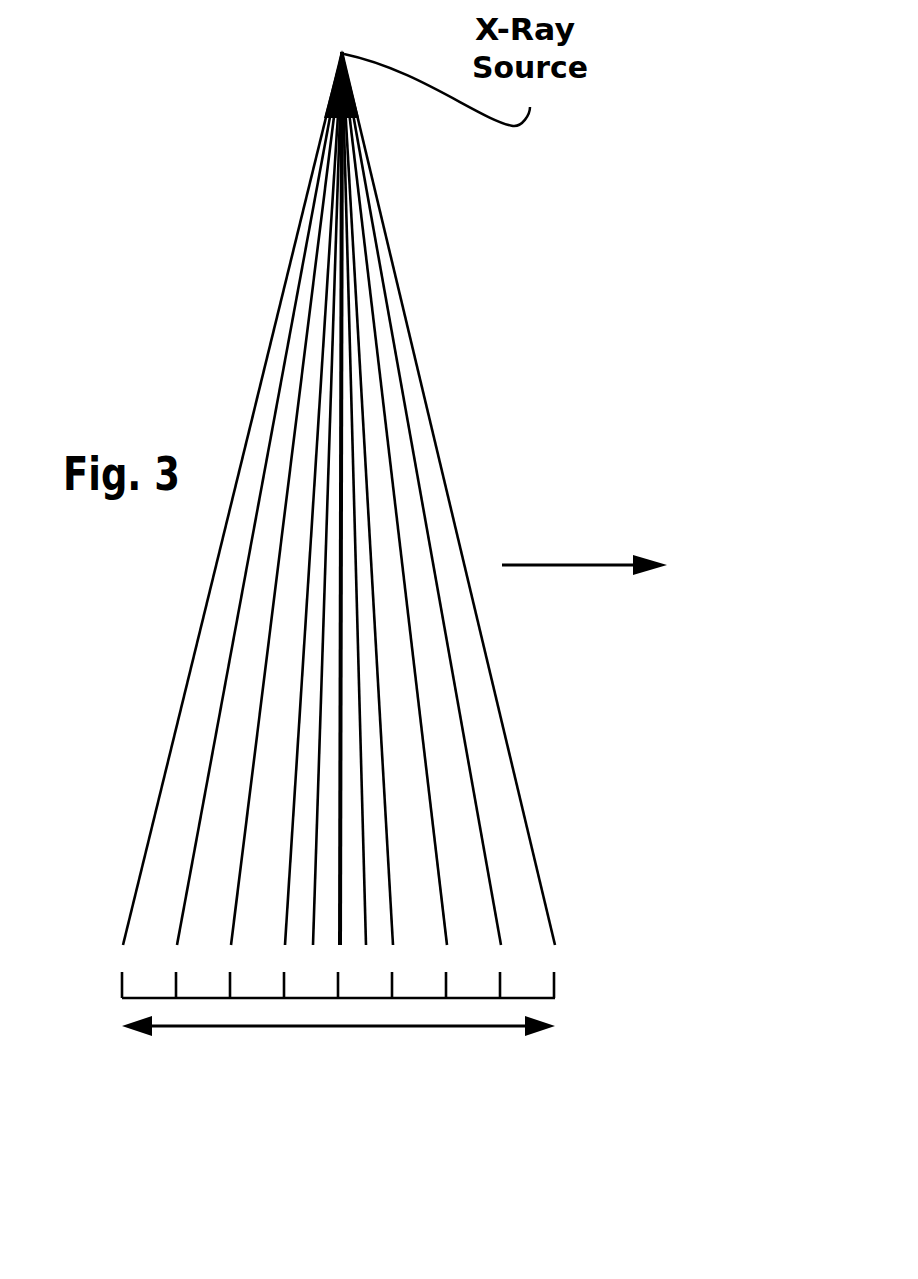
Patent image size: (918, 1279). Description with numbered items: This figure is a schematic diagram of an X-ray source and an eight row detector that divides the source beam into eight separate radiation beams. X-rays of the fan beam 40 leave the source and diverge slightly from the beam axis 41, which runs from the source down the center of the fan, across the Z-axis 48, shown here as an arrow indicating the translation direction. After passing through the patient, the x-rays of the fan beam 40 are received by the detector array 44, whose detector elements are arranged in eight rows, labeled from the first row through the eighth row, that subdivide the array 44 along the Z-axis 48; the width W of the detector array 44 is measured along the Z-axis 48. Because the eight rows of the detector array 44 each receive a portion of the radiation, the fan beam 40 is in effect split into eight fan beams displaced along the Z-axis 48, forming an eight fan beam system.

The fan beam 40 is at (450, 508).
The beam axis 41 is at (340, 778).
The detector array 44 is at (555, 998).
The Z-axis 48 is at (583, 568).